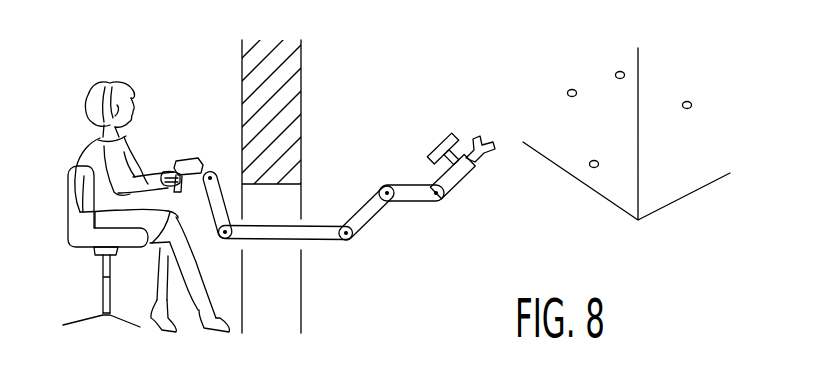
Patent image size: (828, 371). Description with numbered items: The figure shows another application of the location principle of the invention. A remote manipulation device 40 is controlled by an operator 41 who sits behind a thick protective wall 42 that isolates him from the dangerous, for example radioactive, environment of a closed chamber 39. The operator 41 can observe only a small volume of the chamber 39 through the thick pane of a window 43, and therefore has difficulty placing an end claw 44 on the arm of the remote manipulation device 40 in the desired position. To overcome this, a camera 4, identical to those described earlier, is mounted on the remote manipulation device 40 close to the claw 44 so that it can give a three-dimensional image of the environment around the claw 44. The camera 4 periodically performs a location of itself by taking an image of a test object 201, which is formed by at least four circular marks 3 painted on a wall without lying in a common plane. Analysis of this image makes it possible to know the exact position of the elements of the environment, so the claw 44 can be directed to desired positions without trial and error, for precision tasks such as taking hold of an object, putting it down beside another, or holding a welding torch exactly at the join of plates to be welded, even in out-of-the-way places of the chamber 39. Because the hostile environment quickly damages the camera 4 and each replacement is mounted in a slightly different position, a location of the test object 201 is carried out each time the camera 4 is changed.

The circular marks 3 is at (595, 150).
The camera 4 is at (438, 150).
The closed chamber 39 is at (509, 40).
The remote manipulation device 40 is at (370, 213).
The operator 41 is at (158, 132).
The protective wall 42 is at (308, 297).
The window 43 is at (298, 98).
The end claw 44 is at (493, 155).
The test object 201 is at (683, 205).